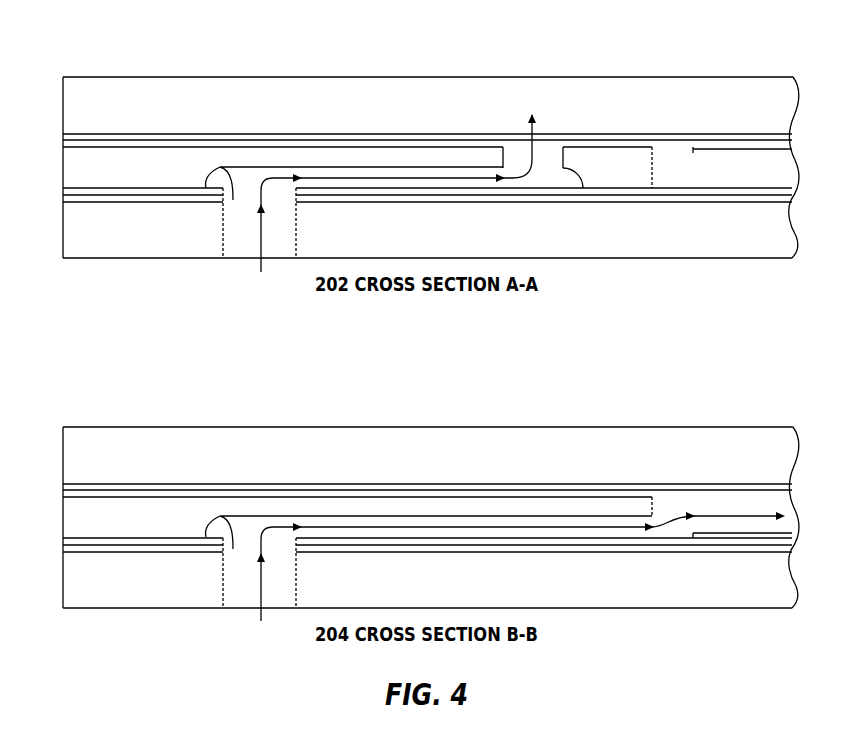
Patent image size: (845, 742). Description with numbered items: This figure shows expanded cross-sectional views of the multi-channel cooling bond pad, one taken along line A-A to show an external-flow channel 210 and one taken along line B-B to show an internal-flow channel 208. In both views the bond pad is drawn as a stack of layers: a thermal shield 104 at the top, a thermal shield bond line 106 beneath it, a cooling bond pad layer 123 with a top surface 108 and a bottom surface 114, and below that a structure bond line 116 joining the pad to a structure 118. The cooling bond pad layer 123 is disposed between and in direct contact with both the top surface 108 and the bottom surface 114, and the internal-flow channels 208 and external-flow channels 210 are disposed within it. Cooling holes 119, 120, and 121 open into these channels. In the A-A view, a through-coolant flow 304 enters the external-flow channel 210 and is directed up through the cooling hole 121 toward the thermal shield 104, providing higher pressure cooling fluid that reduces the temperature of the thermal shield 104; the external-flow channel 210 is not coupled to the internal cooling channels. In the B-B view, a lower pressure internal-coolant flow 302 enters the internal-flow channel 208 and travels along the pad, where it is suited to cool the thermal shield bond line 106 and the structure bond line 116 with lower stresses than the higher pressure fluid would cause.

The thermal shield 104 is at (375, 457).
The top surface 108 is at (140, 482).
The thermal shield bond line 106 is at (606, 484).
The cooling bond pad layer 123 is at (75, 513).
The external-flow channels 210 is at (233, 200).
The internal-flow channels 208 is at (233, 549).
The cooling hole 121 is at (517, 150).
The through-coolant flow 304 is at (260, 263).
The internal-coolant flow 302 is at (260, 612).
The cooling hole 120 is at (279, 192).
The cooling hole 119 is at (279, 541).
The bottom surface 114 is at (752, 537).
The structure bond line 116 is at (672, 556).
The structure 118 is at (708, 591).